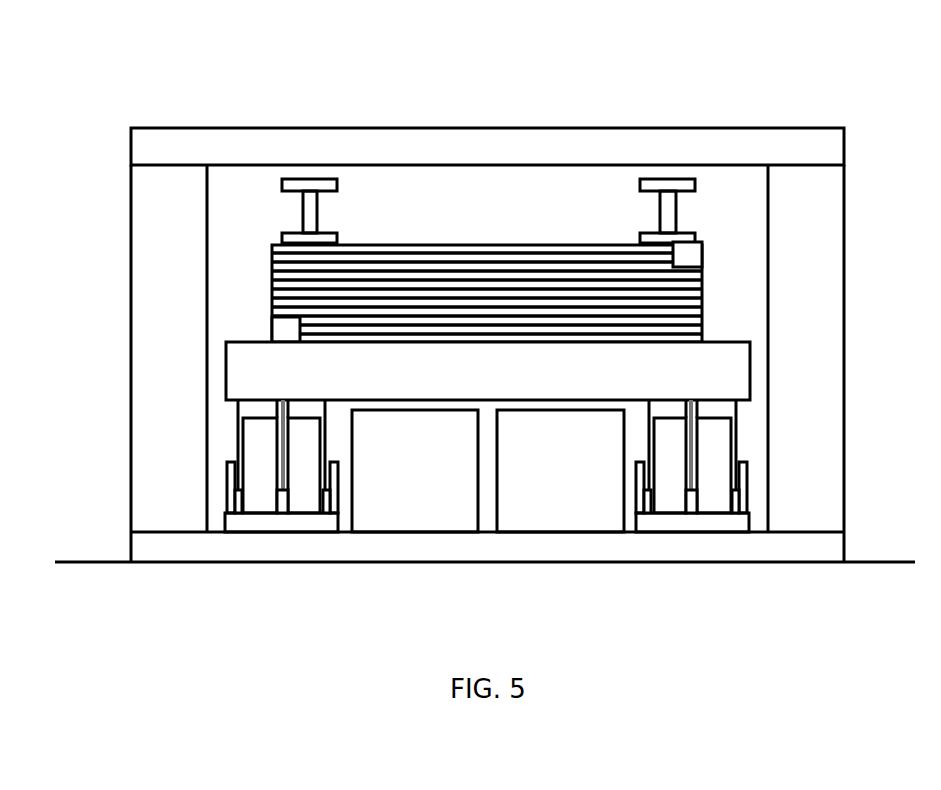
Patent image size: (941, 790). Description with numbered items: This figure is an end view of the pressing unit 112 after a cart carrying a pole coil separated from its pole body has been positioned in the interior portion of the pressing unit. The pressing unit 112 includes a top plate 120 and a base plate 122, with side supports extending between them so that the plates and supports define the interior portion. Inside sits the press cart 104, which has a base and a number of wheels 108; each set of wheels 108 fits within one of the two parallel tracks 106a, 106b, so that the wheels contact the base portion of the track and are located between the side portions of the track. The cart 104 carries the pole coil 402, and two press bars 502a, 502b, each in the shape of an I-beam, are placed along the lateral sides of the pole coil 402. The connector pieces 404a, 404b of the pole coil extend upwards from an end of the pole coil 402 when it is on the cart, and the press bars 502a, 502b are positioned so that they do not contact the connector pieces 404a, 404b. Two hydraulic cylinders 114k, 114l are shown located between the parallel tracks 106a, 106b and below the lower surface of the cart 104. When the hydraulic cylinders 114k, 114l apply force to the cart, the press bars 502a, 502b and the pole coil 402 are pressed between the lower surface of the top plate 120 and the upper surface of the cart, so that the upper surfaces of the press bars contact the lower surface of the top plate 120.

The pressing unit 112 is at (430, 124).
The top plate 120 is at (524, 317).
The base plate 122 is at (479, 542).
The press bar 502a is at (304, 176).
The press bar 502b is at (663, 176).
The pole coil 402 is at (487, 240).
The connector piece 404a is at (266, 330).
The connector piece 404b is at (708, 252).
The press cart 104 is at (224, 370).
The wheels 108 is at (260, 446).
The parallel track 106a is at (752, 523).
The parallel track 106b is at (239, 466).
The hydraulic cylinder 114k is at (390, 507).
The hydraulic cylinder 114l is at (567, 507).